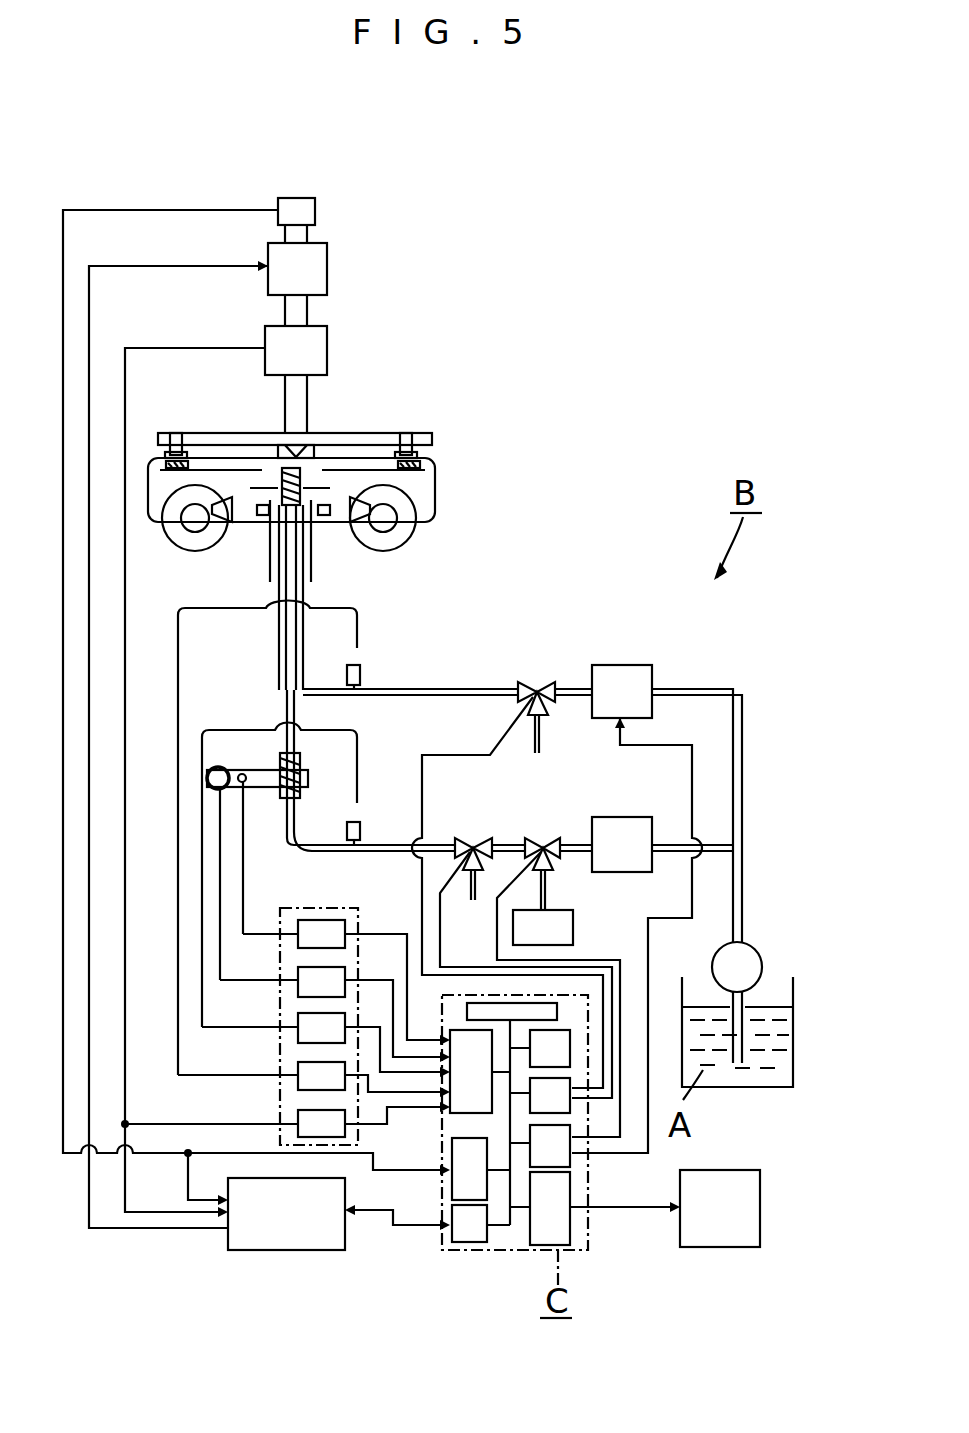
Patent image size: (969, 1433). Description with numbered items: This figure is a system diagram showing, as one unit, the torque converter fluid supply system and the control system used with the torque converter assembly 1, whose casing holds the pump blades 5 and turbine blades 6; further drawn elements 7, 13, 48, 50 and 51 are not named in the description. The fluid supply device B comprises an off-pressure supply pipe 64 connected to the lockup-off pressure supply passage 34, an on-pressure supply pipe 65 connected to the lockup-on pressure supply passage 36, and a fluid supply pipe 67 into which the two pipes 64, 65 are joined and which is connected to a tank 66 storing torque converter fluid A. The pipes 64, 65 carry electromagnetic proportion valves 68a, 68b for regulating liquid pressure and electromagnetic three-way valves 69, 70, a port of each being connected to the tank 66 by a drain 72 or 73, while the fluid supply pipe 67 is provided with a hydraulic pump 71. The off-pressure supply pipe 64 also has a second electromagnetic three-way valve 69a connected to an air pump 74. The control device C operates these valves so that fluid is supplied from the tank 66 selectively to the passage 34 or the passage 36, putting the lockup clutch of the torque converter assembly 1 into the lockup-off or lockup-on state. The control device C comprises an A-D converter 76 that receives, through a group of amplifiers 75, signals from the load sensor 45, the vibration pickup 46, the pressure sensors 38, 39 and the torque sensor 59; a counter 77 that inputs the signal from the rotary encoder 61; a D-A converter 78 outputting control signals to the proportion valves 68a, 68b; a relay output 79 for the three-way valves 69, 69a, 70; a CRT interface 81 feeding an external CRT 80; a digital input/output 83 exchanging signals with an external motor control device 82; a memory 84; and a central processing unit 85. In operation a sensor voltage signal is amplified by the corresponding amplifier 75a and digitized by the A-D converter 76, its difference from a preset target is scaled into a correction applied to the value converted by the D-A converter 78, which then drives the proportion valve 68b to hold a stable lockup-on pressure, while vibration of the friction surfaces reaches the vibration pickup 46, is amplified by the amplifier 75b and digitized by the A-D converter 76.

The torque converter assembly 1 is at (438, 492).
The pump blades 5 is at (410, 543).
The turbine blades 6 is at (407, 503).
The roller 7 is at (222, 536).
The housing 13 is at (432, 457).
The lockup-off pressure supply passage 34 is at (288, 705).
The lockup-on pressure supply passage 36 is at (303, 589).
The pressure sensor 38 is at (358, 822).
The pressure sensor 39 is at (360, 675).
The load sensor 45 is at (205, 772).
The vibration pickup 46 is at (247, 784).
The drive motor 48 is at (328, 272).
The shaft 50 is at (308, 405).
The mounting plate 51 is at (432, 433).
The torque sensor 59 is at (328, 350).
The rotary encoder 61 is at (316, 207).
The lockup-off pressure supply pipe 64 is at (400, 855).
The lockup-on pressure supply pipe 65 is at (448, 689).
The tank 66 is at (783, 1087).
The fluid supply pipe 67 is at (744, 760).
The electromagnetic proportion valve 68a is at (635, 817).
The electromagnetic proportion valve 68b is at (635, 665).
The electromagnetic three-way valve 69 is at (470, 838).
The second electromagnetic three-way valve 69a is at (545, 840).
The electromagnetic three-way valve 70 is at (537, 685).
The hydraulic pump 71 is at (757, 950).
The drain 72 is at (482, 860).
The drain 73 is at (542, 742).
The air pump 74 is at (580, 890).
The group of amplifiers 75 is at (280, 1115).
The amplifier 75a is at (298, 1070).
The amplifier 75b is at (323, 920).
The A-D converter 76 is at (468, 1100).
The counter 77 is at (462, 1178).
The D-A converter 78 is at (558, 1153).
The relay output 79 is at (558, 1105).
The external CRT 80 is at (760, 1217).
The CRT interface 81 is at (558, 1222).
The external motor control device 82 is at (285, 1250).
The digital input/output 83 is at (473, 1232).
The memory 84 is at (555, 1043).
The central processing unit 85 is at (490, 1010).